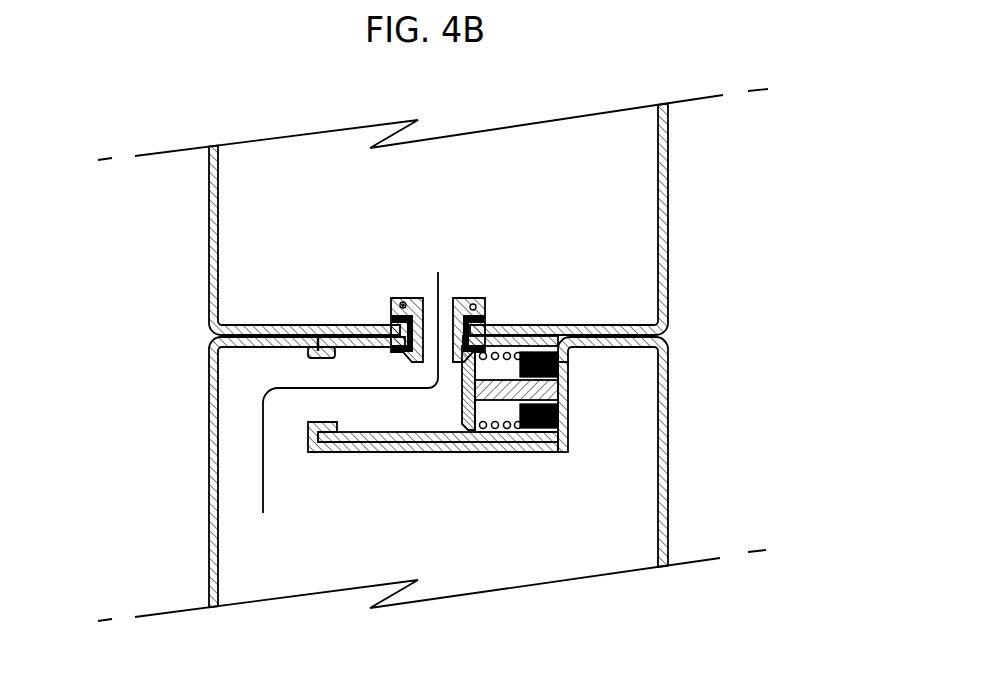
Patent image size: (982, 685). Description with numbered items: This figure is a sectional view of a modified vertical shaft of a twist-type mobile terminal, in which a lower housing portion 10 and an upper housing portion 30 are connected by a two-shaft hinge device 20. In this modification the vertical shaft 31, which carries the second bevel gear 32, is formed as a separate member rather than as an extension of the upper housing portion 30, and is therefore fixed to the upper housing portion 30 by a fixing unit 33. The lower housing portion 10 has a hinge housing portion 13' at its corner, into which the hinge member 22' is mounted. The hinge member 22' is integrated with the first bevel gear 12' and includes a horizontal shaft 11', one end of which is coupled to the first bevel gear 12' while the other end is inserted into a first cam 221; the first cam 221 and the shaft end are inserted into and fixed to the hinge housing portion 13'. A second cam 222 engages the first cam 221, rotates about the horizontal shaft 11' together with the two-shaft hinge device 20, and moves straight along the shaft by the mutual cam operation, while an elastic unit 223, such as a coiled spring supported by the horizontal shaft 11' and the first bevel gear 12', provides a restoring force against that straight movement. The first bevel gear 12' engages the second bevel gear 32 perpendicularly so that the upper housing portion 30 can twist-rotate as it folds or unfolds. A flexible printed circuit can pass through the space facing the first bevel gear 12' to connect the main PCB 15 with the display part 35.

The lower housing portion 10 is at (668, 448).
The upper housing portion 30 is at (628, 200).
The two-shaft hinge device 20 is at (421, 452).
The main PCB 15 is at (300, 469).
The display part 35 is at (401, 312).
The vertical shaft 31 is at (422, 299).
The second bevel gear 32 is at (477, 298).
The fixing unit 33 is at (392, 300).
The first cam 221 is at (558, 350).
The second cam 222 is at (530, 352).
The elastic unit 223 is at (496, 352).
The horizontal shaft 11' is at (609, 384).
The first bevel gear 12' is at (485, 449).
The hinge housing portion 13' is at (584, 456).
The hinge member 22' is at (438, 496).